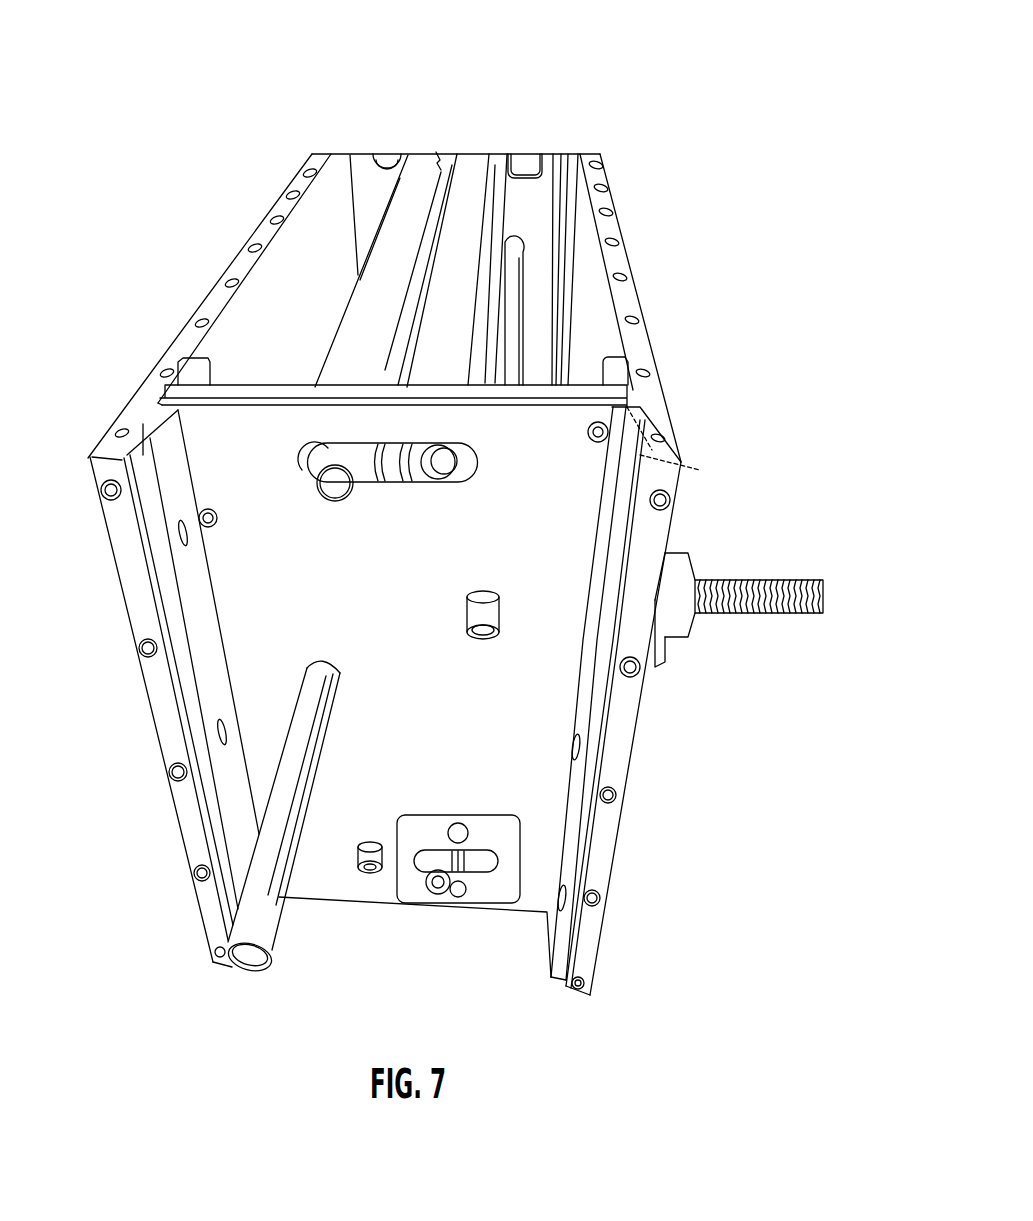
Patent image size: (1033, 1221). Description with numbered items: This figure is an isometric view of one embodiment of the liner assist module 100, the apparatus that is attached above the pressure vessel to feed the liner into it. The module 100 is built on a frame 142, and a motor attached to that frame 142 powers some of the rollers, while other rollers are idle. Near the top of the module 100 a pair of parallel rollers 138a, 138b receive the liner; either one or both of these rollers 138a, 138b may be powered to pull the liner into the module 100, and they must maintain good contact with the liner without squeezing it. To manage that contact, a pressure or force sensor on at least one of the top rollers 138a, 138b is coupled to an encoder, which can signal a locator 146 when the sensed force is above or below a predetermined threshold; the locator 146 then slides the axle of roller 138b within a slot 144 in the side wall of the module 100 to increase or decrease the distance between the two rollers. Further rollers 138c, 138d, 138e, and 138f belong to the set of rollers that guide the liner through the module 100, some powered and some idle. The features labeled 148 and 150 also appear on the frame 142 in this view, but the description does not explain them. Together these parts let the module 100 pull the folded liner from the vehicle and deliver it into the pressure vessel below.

The liner assist module 100 is at (652, 104).
The top roller 138a is at (418, 168).
The top roller 138b is at (483, 164).
The roller 138c is at (472, 645).
The roller 138d is at (250, 966).
The roller 138e is at (430, 893).
The roller 138f is at (358, 845).
The frame 142 is at (657, 418).
The slot 144 is at (122, 548).
The locator 146 is at (614, 395).
The rib 148 is at (548, 187).
The mounting block 150 is at (190, 378).